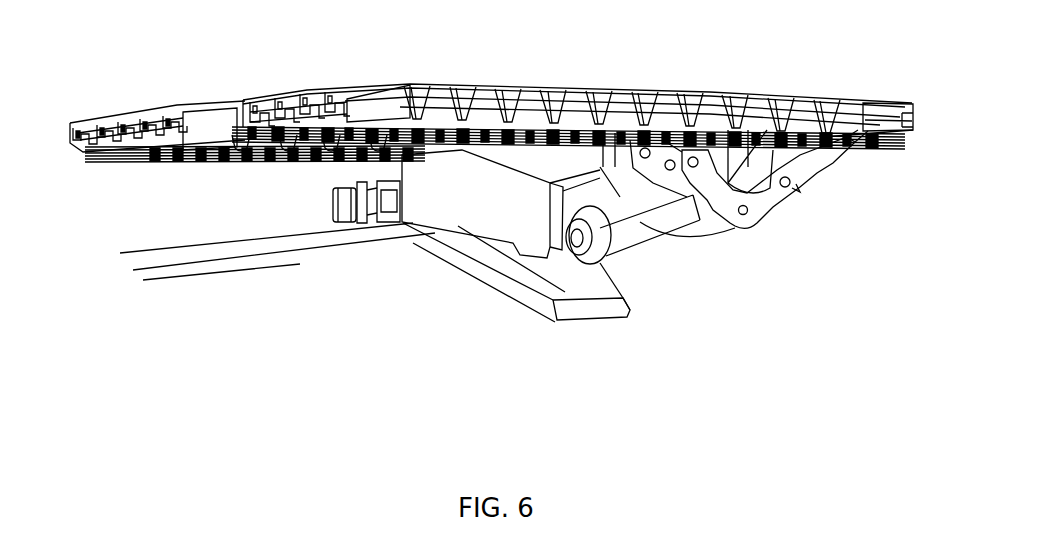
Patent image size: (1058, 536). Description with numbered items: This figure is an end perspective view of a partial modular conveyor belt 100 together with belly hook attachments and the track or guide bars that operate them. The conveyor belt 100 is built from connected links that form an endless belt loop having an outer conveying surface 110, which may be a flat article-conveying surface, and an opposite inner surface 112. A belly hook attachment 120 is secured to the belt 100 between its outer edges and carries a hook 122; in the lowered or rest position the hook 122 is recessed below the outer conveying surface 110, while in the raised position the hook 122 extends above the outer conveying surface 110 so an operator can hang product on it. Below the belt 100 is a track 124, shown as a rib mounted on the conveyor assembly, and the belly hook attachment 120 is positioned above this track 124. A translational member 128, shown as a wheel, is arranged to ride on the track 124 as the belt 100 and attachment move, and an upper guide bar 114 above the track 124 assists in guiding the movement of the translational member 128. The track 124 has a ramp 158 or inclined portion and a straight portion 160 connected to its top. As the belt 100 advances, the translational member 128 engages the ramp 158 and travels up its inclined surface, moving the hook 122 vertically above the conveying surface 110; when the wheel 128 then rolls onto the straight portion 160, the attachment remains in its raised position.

The conveyor belt 100 is at (857, 130).
The outer conveying surface 110 is at (533, 86).
The inner surface 112 is at (313, 148).
The upper guide bar 114 is at (487, 185).
The belly hook attachment 120 is at (692, 220).
The hook 122 is at (584, 118).
The track 124 is at (500, 280).
The translational member 128 is at (358, 222).
The ramp 158 is at (553, 287).
The straight portion 160 is at (193, 253).